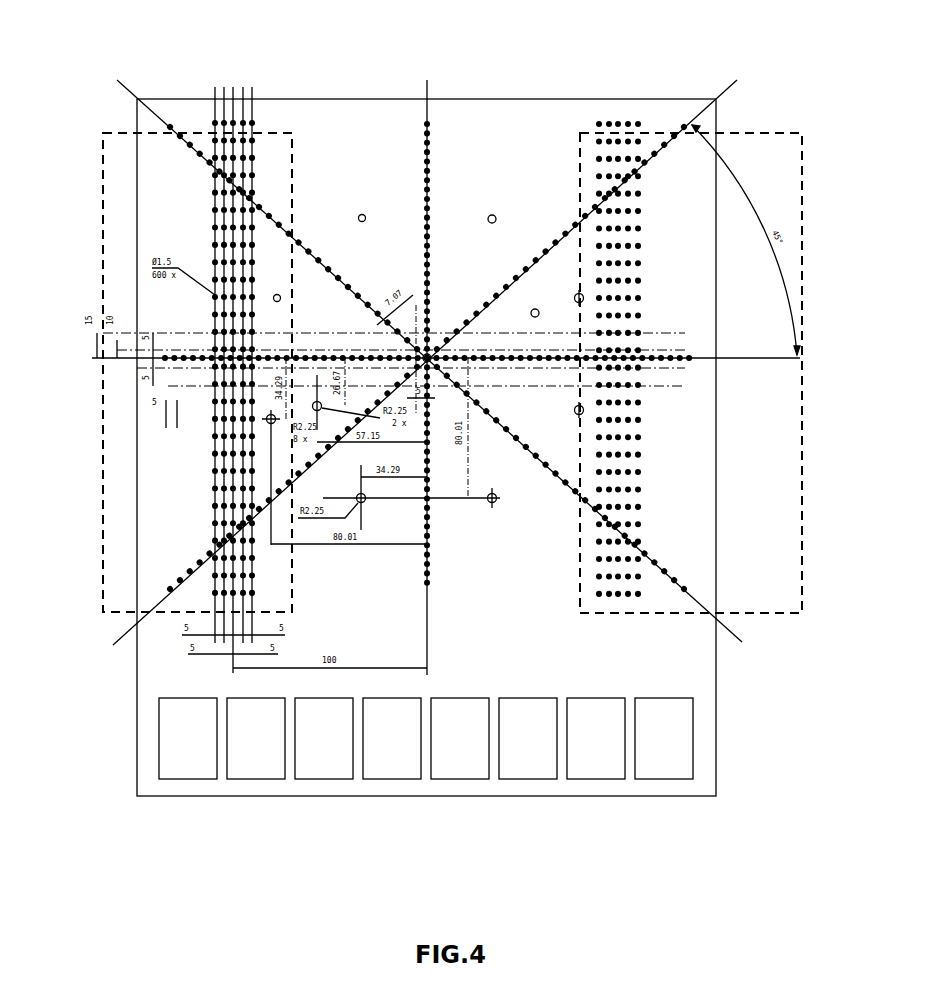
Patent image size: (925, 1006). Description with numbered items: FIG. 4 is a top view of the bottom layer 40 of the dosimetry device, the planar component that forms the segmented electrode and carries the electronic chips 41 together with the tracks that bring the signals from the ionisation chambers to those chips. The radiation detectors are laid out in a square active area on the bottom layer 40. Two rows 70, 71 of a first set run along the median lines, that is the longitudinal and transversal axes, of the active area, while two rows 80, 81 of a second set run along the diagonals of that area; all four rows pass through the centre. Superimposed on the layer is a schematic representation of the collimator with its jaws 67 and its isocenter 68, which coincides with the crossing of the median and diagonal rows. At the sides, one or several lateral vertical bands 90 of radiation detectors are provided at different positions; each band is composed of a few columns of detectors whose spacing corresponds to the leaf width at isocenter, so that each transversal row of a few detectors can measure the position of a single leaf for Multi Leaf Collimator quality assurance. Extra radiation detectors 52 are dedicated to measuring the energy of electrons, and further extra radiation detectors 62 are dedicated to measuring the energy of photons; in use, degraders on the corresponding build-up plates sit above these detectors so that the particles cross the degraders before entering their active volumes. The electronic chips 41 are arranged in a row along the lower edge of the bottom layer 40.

The bottom layer 40 is at (136, 475).
The electronic chips 41 is at (668, 760).
The extra radiation detectors 52 is at (497, 214).
The extra radiation detectors 62 is at (535, 306).
The jaws 67 is at (97, 247).
The isocenter 68 is at (440, 362).
The row of the first set 70 is at (411, 135).
The row of the first set 71 is at (690, 356).
The row of the second set 80 is at (196, 163).
The row of the second set 81 is at (673, 128).
The lateral bands of radiation detectors 90 is at (210, 513).